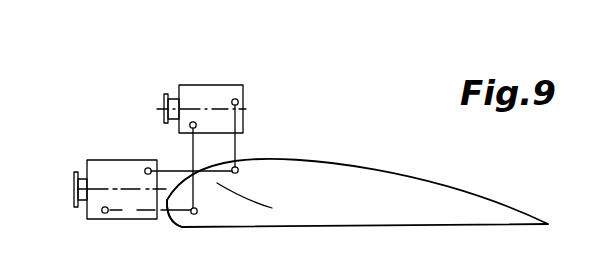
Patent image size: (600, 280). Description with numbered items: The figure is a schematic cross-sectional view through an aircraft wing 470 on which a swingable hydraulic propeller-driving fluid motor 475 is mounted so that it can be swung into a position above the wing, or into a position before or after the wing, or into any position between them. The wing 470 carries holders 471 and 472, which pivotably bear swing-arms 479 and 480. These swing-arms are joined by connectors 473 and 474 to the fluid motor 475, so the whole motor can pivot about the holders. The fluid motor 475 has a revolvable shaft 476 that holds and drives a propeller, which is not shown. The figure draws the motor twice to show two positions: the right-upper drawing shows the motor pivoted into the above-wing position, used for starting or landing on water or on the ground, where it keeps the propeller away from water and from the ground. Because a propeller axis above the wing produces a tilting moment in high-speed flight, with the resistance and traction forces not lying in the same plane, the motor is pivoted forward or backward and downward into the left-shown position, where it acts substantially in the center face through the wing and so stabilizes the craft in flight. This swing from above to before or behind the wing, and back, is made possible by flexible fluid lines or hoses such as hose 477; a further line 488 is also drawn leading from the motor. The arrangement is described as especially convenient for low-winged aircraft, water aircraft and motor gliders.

The wing 470 is at (327, 217).
The holder 471 is at (238, 172).
The holder 472 is at (198, 210).
The connector 473 is at (238, 102).
The connector 474 is at (195, 122).
The propeller-driving fluid motor 475 is at (188, 93).
The revolvable shaft 476 is at (163, 102).
The flexible fluid line or hose 477 is at (244, 119).
The swing-arm 479 is at (178, 216).
The swing-arm 480 is at (264, 201).
The link 488 is at (244, 128).